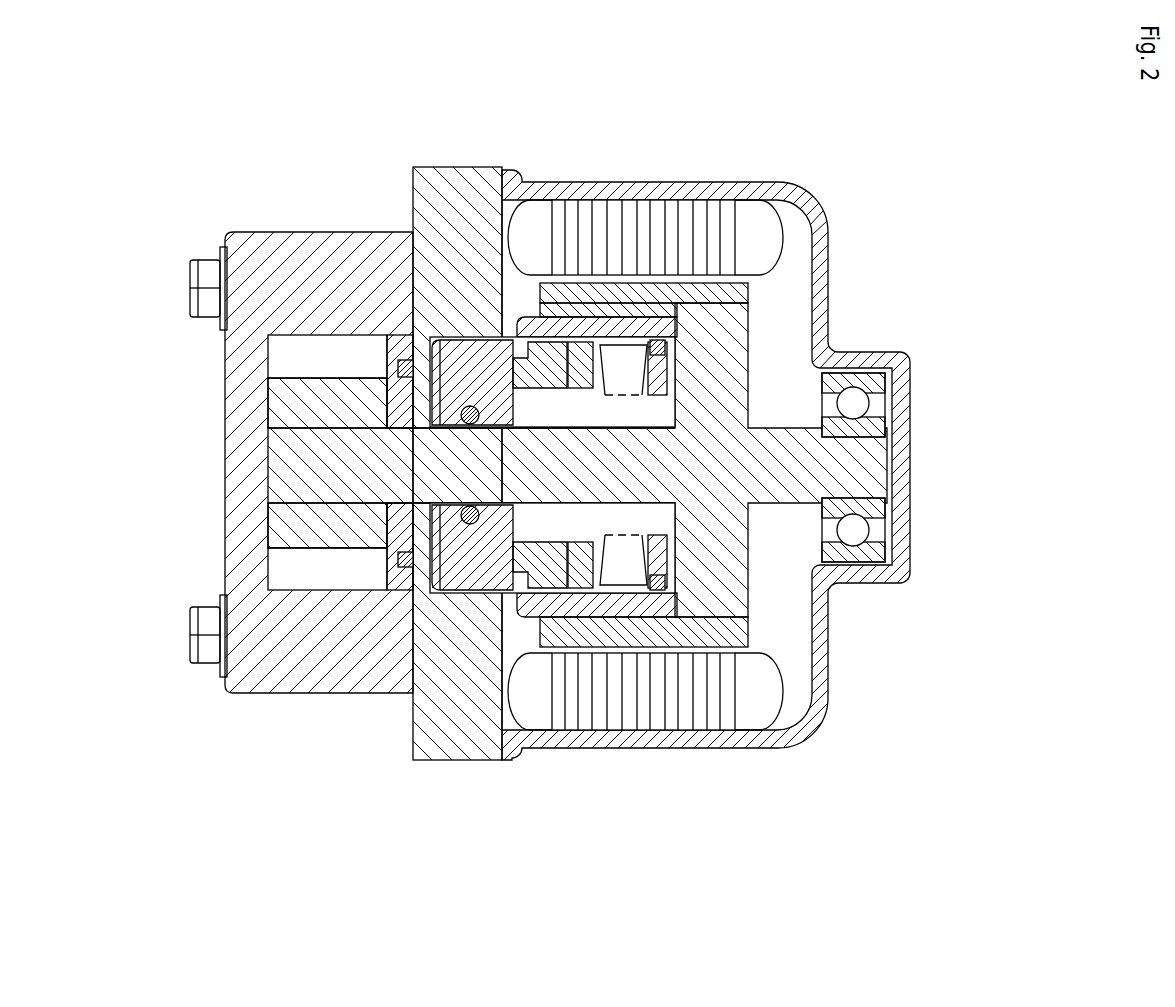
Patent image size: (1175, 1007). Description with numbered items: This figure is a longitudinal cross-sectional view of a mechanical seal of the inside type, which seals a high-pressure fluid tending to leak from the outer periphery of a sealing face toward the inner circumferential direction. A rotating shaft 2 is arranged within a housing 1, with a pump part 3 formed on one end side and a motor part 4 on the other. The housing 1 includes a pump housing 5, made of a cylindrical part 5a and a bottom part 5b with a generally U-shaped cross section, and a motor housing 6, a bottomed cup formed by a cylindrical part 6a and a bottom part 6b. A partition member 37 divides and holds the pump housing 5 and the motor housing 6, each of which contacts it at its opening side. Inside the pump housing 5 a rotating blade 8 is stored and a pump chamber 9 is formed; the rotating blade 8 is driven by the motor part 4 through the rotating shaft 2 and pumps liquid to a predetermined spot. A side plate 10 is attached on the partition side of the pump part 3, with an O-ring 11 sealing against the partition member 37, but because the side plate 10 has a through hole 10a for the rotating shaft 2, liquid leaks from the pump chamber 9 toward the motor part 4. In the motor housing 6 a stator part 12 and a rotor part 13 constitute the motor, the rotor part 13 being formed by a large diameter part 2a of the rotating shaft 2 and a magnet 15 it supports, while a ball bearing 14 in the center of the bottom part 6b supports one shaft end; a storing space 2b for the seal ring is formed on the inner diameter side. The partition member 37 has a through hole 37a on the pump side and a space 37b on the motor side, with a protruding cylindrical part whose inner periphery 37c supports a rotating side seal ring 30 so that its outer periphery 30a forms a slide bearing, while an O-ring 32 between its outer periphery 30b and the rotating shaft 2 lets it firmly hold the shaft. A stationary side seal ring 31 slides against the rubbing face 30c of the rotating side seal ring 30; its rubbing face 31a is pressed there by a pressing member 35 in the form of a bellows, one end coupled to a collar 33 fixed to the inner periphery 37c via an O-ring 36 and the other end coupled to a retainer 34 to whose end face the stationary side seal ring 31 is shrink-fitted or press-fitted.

The housing 1 is at (373, 170).
The rotating shaft 2 is at (268, 452).
The large diameter part 2a is at (745, 372).
The storing space 2b is at (748, 414).
The pump part 3 is at (284, 364).
The motor part 4 is at (783, 260).
The pump housing 5 is at (253, 232).
The cylindrical part 5a is at (325, 262).
The bottom part 5b is at (240, 410).
The motor housing 6 is at (780, 185).
The cylindrical part 6a is at (738, 196).
The bottom part 6b is at (822, 336).
The rotating blade 8 is at (385, 490).
The pump chamber 9 is at (287, 578).
The side plate 10 is at (318, 612).
The through hole 10a is at (327, 569).
The O-ring 11 is at (393, 568).
The stator part 12 is at (715, 212).
The rotor part 13 is at (745, 357).
The ball bearing 14 is at (887, 388).
The magnet 15 is at (758, 332).
The rotating side seal ring 30 is at (520, 330).
The outer periphery 30a is at (472, 345).
The outer periphery 30b is at (540, 379).
The rubbing face 30c is at (548, 556).
The stationary side seal ring 31 is at (575, 340).
The rubbing face 31a is at (556, 562).
The O-ring 32 is at (440, 583).
The collar 33 is at (680, 545).
The retainer 34 is at (626, 575).
The pressing member 35 is at (655, 588).
The O-ring 36 is at (672, 575).
The partition member 37 is at (445, 330).
The through hole 37a is at (327, 356).
The space 37b is at (405, 330).
The inner periphery 37c is at (652, 340).